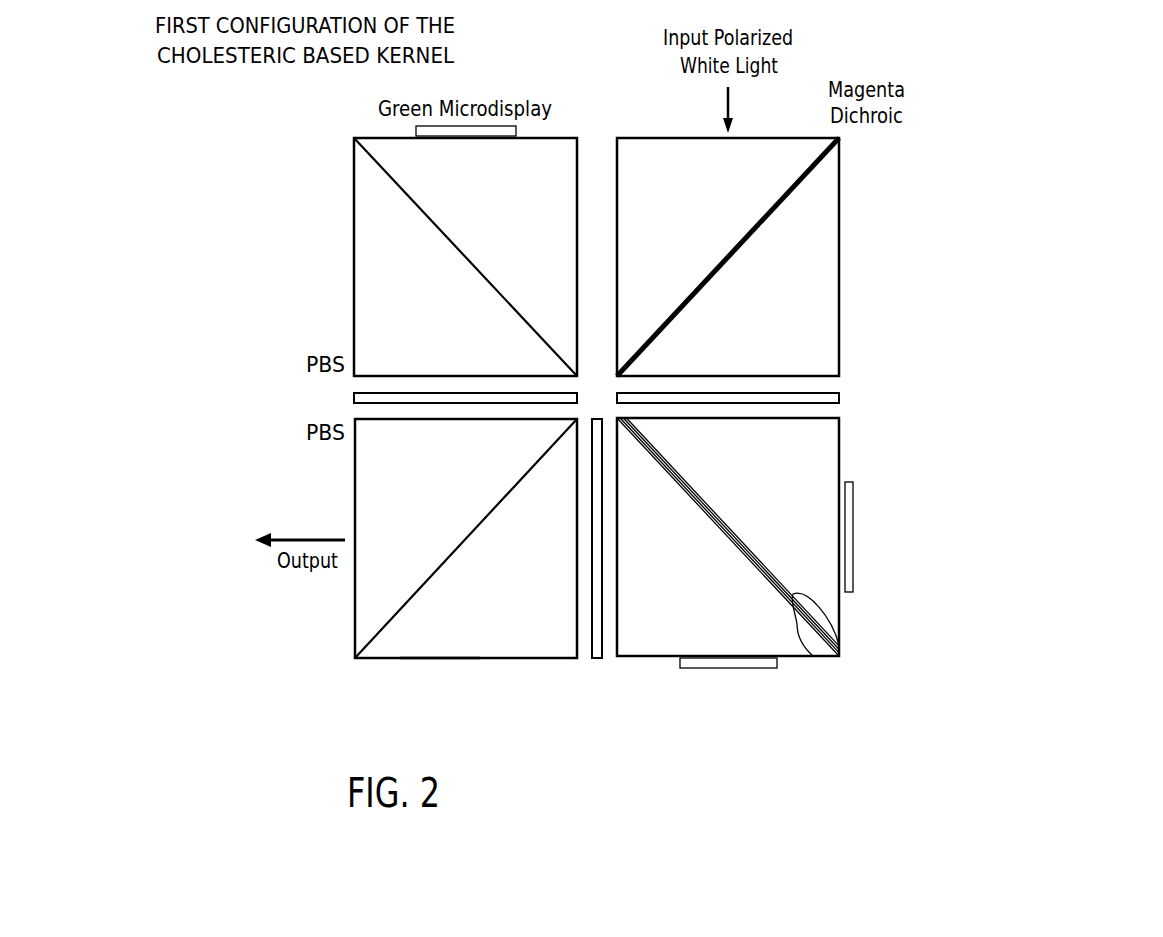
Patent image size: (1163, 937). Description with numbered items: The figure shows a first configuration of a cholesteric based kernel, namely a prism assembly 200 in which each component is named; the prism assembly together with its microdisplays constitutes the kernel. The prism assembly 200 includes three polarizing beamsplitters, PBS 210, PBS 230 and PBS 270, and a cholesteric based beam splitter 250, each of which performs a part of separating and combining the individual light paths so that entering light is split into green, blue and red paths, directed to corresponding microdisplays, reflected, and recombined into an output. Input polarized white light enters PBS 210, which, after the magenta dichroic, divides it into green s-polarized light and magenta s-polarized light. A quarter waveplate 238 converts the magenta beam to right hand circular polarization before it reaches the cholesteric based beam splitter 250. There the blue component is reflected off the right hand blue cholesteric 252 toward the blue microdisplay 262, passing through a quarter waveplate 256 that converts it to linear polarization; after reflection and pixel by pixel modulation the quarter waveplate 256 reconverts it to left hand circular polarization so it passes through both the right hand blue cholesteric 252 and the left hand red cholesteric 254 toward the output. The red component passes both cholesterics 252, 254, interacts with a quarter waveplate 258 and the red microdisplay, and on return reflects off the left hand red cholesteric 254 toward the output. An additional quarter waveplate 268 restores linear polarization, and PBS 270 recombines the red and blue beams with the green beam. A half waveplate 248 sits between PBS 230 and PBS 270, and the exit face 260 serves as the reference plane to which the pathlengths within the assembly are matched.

The prism assembly 200 is at (976, 176).
The polarizing beamsplitter 210 is at (839, 284).
The polarizing beamsplitter 230 is at (354, 268).
The quarter waveplate 238 is at (816, 409).
The half waveplate 248 is at (391, 414).
The cholesteric based beam splitter 250 is at (648, 659).
The right hand blue cholesteric 252 is at (839, 637).
The left hand red cholesteric 254 is at (805, 656).
The quarter waveplate 256 is at (845, 592).
The quarter waveplate 258 is at (778, 660).
The exit face 260 is at (355, 600).
The blue microdisplay 262 is at (931, 537).
The quarter waveplate 268 is at (595, 584).
The polarizing beamsplitter 270 is at (437, 658).